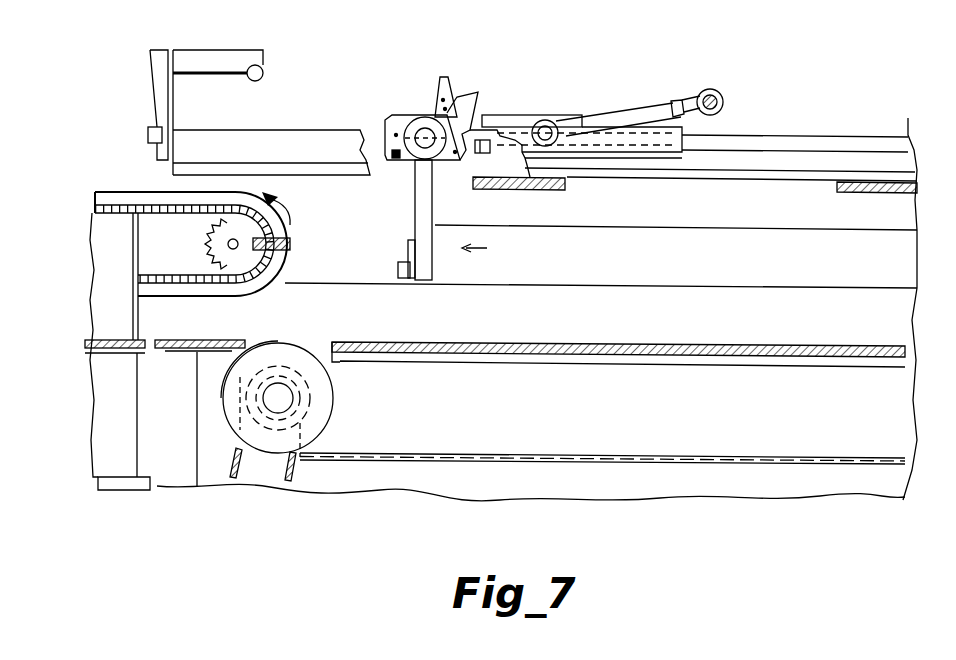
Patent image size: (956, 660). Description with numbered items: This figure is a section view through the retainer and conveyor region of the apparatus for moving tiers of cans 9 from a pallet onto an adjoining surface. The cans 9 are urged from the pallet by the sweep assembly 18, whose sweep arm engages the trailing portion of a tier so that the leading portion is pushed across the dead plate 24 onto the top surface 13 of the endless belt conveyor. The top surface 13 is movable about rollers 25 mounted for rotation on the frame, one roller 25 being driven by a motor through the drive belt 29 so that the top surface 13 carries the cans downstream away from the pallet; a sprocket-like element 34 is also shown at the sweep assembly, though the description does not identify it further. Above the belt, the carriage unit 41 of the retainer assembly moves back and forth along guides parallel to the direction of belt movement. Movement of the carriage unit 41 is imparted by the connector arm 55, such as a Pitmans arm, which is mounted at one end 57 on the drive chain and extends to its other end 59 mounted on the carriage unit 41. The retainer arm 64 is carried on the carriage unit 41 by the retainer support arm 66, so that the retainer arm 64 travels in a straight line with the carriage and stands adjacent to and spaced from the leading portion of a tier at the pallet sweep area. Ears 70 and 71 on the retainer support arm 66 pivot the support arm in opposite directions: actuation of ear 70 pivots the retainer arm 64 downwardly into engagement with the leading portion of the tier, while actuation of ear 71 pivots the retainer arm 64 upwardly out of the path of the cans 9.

The cans 9 is at (128, 342).
The top surface 13 is at (710, 345).
The sweep assembly 18 is at (152, 205).
The dead plate 24 is at (232, 337).
The rollers 25 is at (235, 405).
The drive belt 29 is at (293, 483).
The sprocket 34 is at (247, 210).
The carriage unit 41 is at (507, 120).
The connector arm 55 is at (638, 112).
The end 57 is at (717, 90).
The end 59 is at (550, 125).
The retainer arm 64 is at (398, 266).
The retainer support arm 66 is at (428, 190).
The ear 70 is at (467, 92).
The ear 71 is at (442, 75).